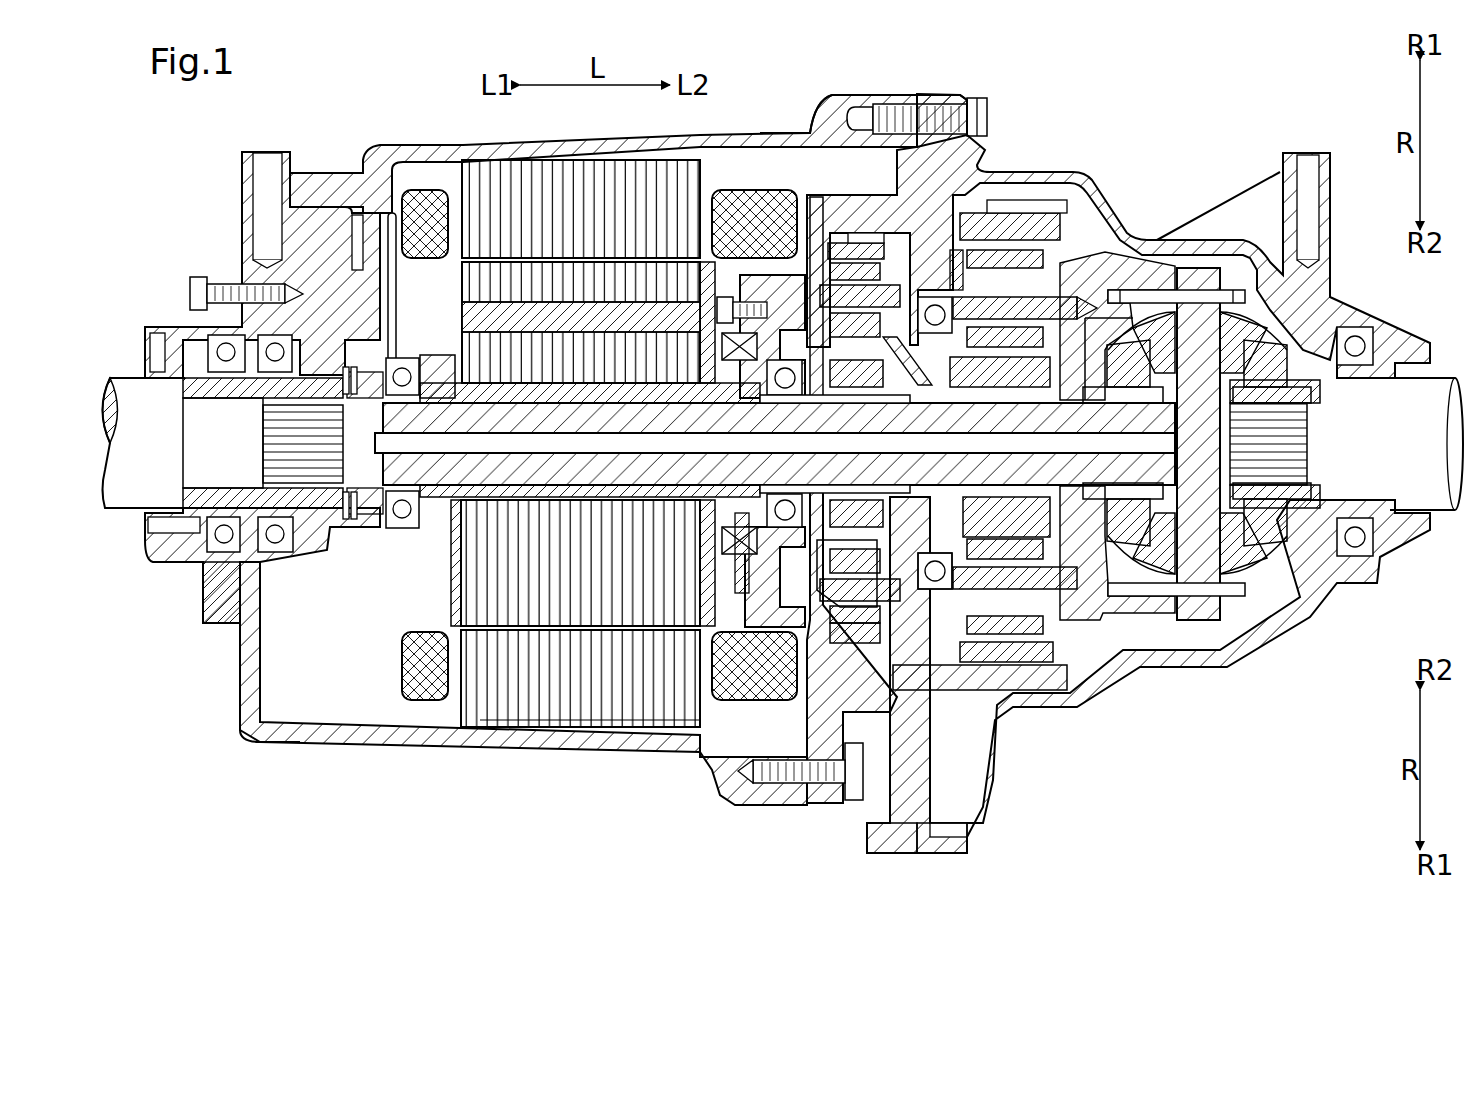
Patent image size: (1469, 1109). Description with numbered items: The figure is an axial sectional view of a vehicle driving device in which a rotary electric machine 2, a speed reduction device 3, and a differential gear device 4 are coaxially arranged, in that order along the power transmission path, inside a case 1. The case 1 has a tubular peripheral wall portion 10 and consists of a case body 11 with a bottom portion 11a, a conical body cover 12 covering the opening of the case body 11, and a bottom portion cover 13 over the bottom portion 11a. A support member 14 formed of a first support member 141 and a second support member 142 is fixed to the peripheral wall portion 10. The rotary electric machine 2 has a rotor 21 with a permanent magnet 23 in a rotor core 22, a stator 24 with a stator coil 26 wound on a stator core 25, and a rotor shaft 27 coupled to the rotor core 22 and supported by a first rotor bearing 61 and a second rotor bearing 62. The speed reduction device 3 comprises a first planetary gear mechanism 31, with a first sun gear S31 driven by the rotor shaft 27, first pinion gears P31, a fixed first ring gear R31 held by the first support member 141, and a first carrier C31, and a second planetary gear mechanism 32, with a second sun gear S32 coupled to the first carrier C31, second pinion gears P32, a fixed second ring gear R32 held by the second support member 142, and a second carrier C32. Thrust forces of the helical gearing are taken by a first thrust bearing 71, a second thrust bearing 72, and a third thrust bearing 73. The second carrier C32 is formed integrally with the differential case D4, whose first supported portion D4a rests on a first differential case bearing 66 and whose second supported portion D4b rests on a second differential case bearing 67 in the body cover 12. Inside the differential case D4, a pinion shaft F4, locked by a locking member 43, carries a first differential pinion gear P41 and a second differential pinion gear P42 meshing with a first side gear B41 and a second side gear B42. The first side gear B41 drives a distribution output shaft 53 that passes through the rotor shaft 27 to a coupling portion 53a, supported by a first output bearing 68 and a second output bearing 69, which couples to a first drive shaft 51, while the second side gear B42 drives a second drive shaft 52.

The case 1 is at (990, 138).
The rotary electric machine 2 is at (540, 745).
The speed reduction device 3 is at (917, 77).
The differential gear device 4 is at (1225, 620).
The peripheral wall portion 10 is at (773, 130).
The case body 11 is at (730, 800).
The bottom portion 11a is at (240, 690).
The body cover 12 is at (1005, 785).
The bottom portion cover 13 is at (170, 560).
The support member 14 is at (907, 880).
The first support member 141 is at (875, 825).
The second support member 142 is at (937, 860).
The rotor 21 is at (460, 595).
The rotor core 22 is at (472, 284).
The permanent magnet 23 is at (472, 315).
The stator 24 is at (460, 708).
The stator core 25 is at (600, 722).
The stator coil 26 is at (400, 652).
The rotor shaft 27 is at (420, 372).
The first planetary gear mechanism 31 is at (865, 118).
The second planetary gear mechanism 32 is at (958, 97).
The locking member 43 is at (1217, 222).
The first drive shaft 51 is at (130, 380).
The second drive shaft 52 is at (1450, 378).
The distribution output shaft 53 is at (350, 522).
The coupling portion 53a is at (215, 385).
The first rotor bearing 61 is at (400, 528).
The second rotor bearing 62 is at (790, 330).
The first differential case bearing 66 is at (945, 572).
The second differential case bearing 67 is at (1355, 335).
The first output bearing 68 is at (224, 565).
The second output bearing 69 is at (280, 552).
The first thrust bearing 71 is at (782, 396).
The second thrust bearing 72 is at (860, 397).
The third thrust bearing 73 is at (950, 388).
The first ring gear R31 is at (845, 243).
The first pinion gear P31 is at (870, 275).
The first sun gear S31 is at (858, 530).
The first carrier C31 is at (990, 715).
The second ring gear R32 is at (1035, 215).
The second pinion gear P32 is at (1050, 262).
The second sun gear S32 is at (988, 535).
The second carrier C32 is at (1070, 625).
The first differential pinion gear P41 is at (1150, 325).
The second differential pinion gear P42 is at (1262, 558).
The differential case D4 is at (1242, 290).
The first supported portion D4a is at (933, 545).
The second supported portion D4b is at (1382, 557).
The pinion shaft F4 is at (1195, 620).
The first side gear B41 is at (1125, 575).
The second side gear B42 is at (1250, 572).